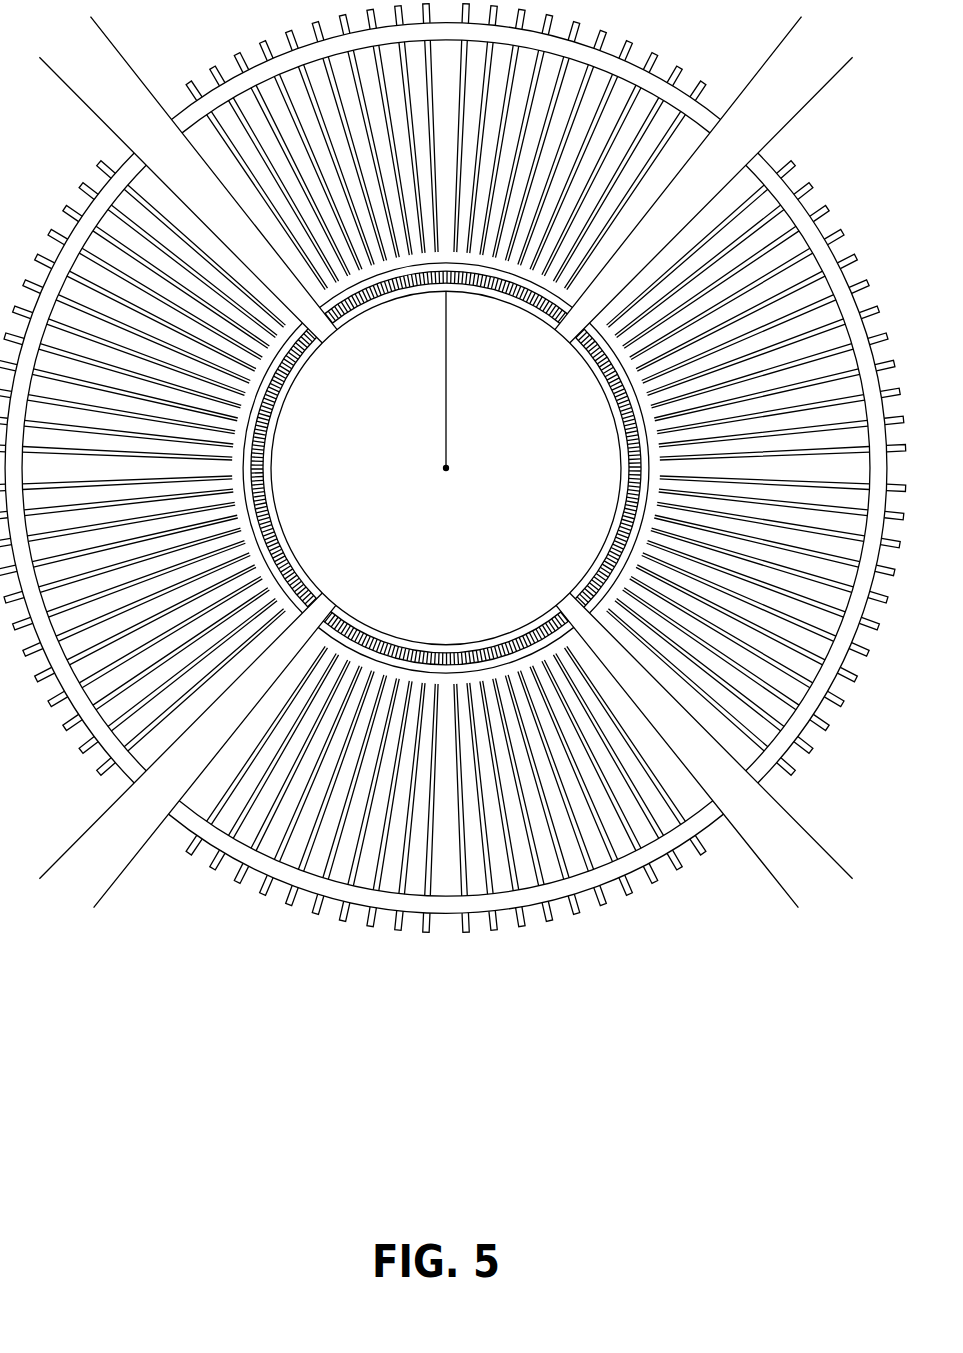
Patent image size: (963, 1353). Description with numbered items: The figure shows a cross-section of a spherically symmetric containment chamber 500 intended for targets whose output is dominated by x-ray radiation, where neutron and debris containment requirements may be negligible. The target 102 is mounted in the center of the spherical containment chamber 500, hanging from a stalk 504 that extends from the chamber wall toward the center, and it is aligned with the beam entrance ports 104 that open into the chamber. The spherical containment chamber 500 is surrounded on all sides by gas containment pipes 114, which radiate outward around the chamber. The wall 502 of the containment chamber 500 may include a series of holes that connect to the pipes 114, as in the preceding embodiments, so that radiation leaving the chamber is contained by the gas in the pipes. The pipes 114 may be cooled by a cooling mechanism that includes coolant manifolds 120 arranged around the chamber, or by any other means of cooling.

The spherical containment chamber 500 is at (453, 584).
The target 102 is at (500, 484).
The beam entrance ports 104 is at (415, 150).
The gas containment pipes 114 is at (749, 468).
The coolant manifolds 120 is at (77, 190).
The wall 502 is at (446, 468).
The stalk 504 is at (512, 379).